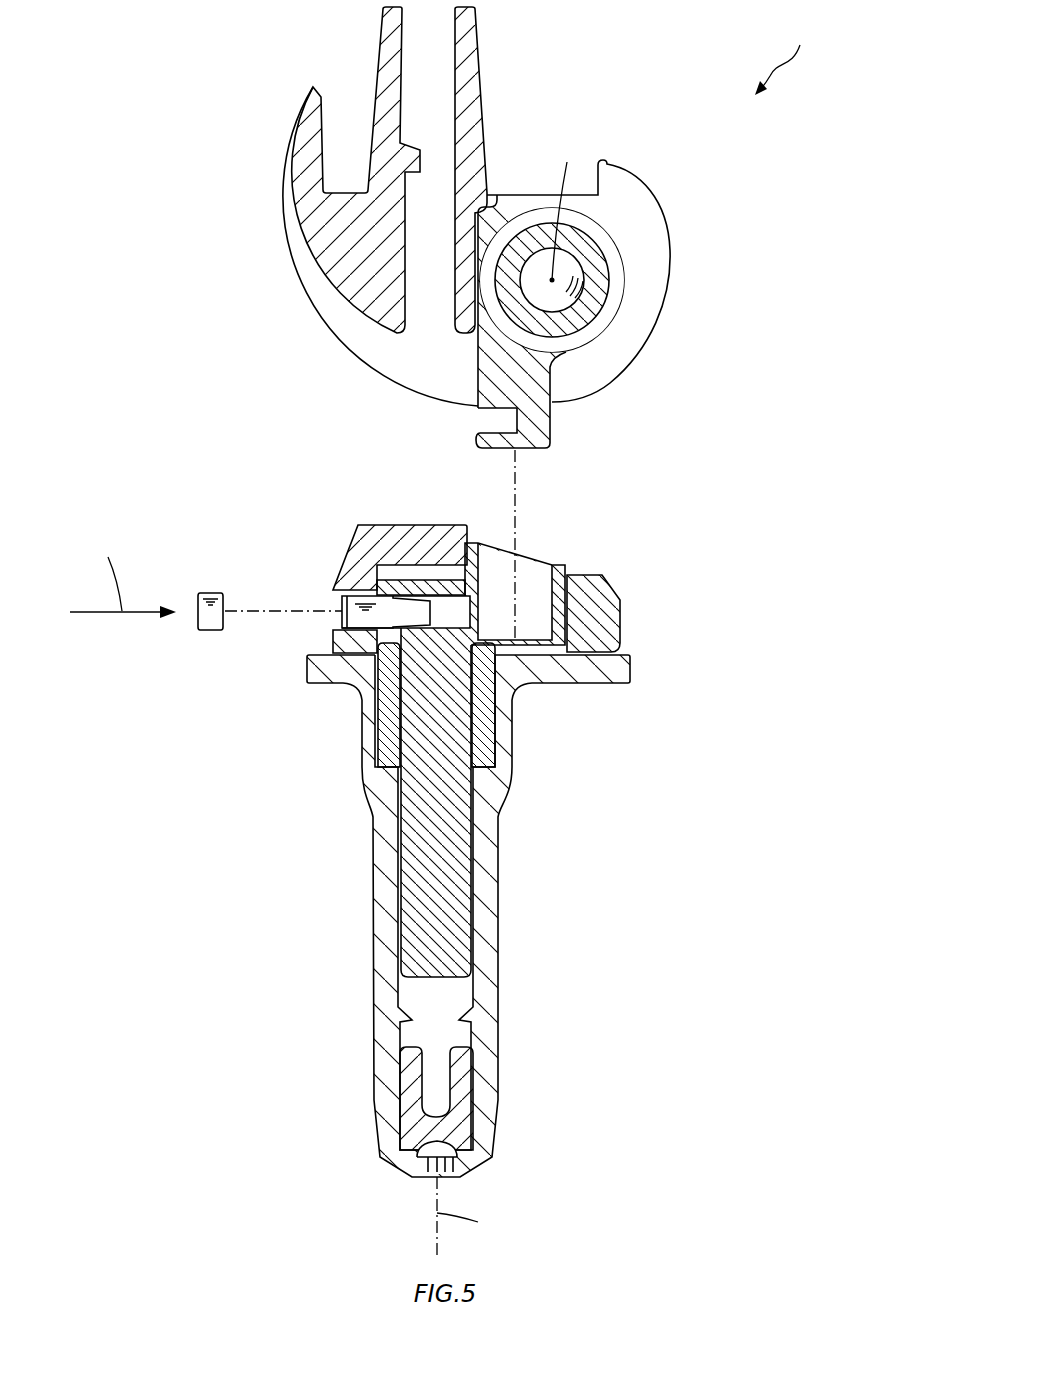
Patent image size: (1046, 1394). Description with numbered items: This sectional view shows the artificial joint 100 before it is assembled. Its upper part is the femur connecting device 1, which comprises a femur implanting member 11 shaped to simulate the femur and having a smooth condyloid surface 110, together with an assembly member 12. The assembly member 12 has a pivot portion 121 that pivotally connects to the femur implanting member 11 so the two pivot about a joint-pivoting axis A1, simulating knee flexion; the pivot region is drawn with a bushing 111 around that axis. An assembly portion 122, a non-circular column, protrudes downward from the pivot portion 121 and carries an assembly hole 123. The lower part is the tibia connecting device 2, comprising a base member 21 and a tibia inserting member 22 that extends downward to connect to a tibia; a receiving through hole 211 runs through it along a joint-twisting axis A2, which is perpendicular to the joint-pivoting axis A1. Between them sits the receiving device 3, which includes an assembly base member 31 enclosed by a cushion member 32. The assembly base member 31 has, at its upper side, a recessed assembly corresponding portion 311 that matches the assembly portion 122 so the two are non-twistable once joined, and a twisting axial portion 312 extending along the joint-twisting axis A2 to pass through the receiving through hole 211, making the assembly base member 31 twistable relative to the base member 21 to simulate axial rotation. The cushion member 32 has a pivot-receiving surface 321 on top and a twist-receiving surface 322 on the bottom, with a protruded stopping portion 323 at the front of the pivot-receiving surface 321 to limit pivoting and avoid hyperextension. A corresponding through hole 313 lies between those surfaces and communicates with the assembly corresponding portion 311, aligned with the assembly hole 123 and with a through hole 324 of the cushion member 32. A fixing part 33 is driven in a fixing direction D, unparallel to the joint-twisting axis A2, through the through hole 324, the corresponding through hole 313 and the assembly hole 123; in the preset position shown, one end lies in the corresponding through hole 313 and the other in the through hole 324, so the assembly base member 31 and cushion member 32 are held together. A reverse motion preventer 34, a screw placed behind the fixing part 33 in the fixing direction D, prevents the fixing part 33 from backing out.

The artificial joint 100 is at (788, 55).
The femur connecting device 1 is at (531, 238).
The femur implanting member 11 is at (513, 206).
The condyloid surface 110 is at (325, 318).
The pivot bushing 111 is at (600, 228).
The assembly member 12 is at (637, 337).
The pivot portion 121 is at (597, 318).
The assembly portion 122 is at (532, 416).
The assembly hole 123 is at (523, 430).
The tibia connecting device 2 is at (535, 916).
The base member 21 is at (610, 672).
The tibia inserting member 22 is at (487, 832).
The receiving through hole 211 is at (457, 995).
The receiving device 3 is at (466, 714).
The assembly base member 31 is at (528, 721).
The assembly corresponding portion 311 is at (533, 587).
The twisting axial portion 312 is at (457, 860).
The corresponding through hole 313 is at (443, 612).
The cushion member 32 is at (477, 609).
The pivot-receiving surface 321 is at (583, 573).
The twist-receiving surface 322 is at (358, 660).
The stopping portion 323 is at (388, 532).
The through hole 324 is at (335, 626).
The fixing part 33 is at (342, 598).
The reverse motion preventer 34 is at (210, 593).
The joint-pivoting axis A1 is at (569, 205).
The joint-twisting axis A2 is at (475, 1217).
The fixing direction D is at (123, 574).